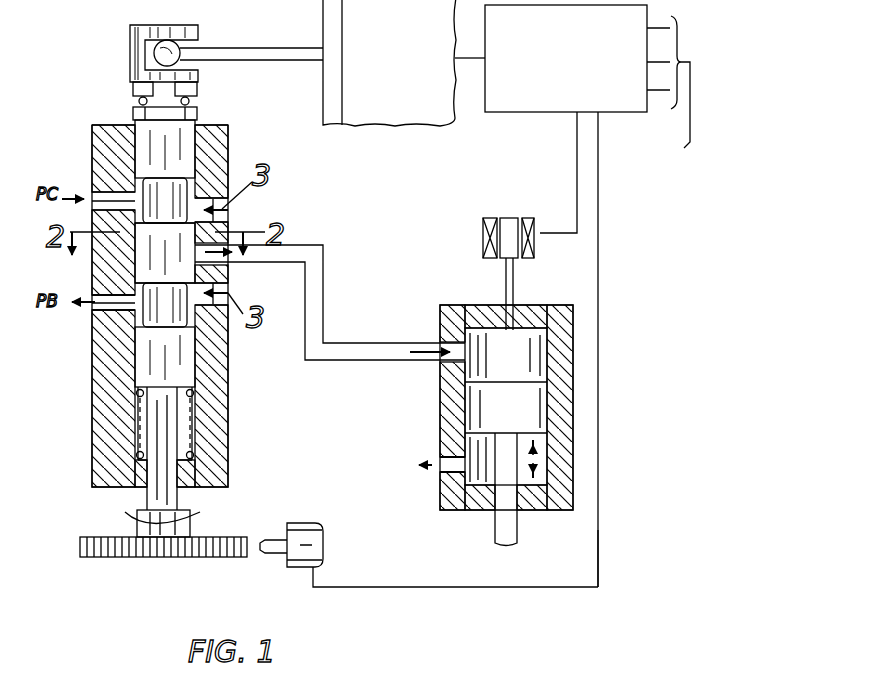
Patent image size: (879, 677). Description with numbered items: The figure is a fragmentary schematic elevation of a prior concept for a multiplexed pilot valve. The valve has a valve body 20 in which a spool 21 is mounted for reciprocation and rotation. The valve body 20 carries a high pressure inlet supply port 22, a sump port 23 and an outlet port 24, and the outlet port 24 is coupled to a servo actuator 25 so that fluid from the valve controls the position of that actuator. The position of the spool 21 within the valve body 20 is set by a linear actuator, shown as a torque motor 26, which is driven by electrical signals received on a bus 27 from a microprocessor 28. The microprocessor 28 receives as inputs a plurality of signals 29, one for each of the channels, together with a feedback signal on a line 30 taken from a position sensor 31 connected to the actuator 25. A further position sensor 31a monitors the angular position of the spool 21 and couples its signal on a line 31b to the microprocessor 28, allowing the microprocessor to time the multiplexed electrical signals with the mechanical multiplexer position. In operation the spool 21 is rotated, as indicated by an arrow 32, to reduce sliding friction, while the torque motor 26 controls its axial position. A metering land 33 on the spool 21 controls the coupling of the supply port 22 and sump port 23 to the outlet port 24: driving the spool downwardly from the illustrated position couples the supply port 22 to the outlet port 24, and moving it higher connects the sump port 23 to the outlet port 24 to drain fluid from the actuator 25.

The valve body 20 is at (228, 424).
The spool 21 is at (143, 365).
The high pressure inlet supply port 22 is at (133, 306).
The sump port 23 is at (118, 313).
The outlet port 24 is at (213, 238).
The servo actuator 25 is at (550, 305).
The torque motor 26 is at (424, 128).
The bus 27 is at (475, 62).
The microprocessor 28 is at (546, 113).
The signals 29 is at (680, 14).
The line 30 is at (540, 233).
The position sensor 31 is at (511, 216).
The position sensor 31a is at (307, 522).
The line 31b is at (598, 538).
The arrow 32 is at (122, 510).
The metering land 33 is at (150, 252).